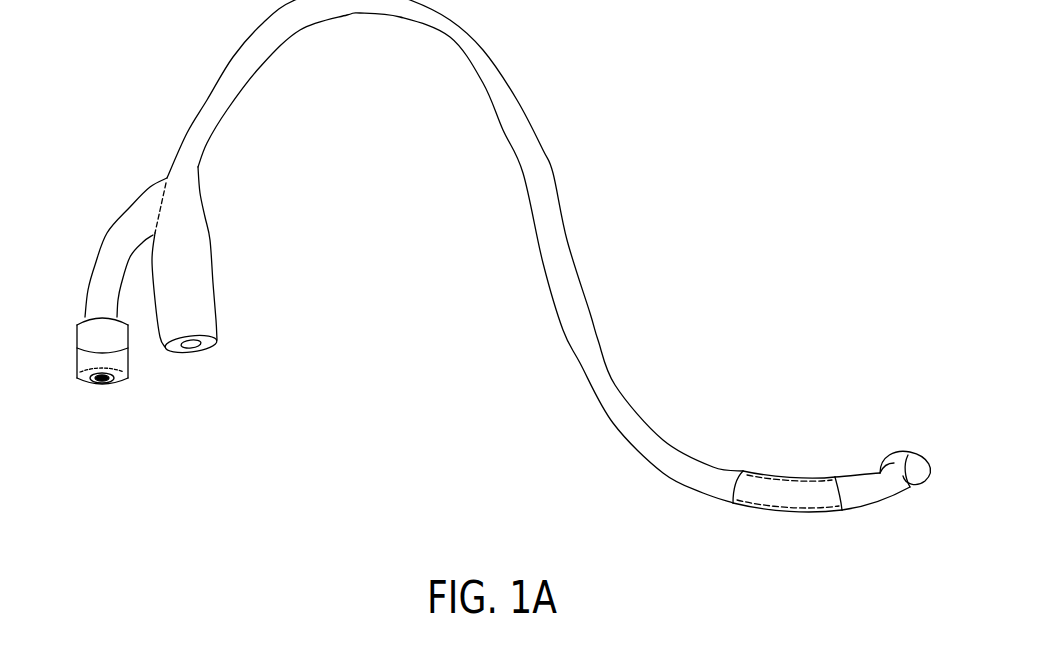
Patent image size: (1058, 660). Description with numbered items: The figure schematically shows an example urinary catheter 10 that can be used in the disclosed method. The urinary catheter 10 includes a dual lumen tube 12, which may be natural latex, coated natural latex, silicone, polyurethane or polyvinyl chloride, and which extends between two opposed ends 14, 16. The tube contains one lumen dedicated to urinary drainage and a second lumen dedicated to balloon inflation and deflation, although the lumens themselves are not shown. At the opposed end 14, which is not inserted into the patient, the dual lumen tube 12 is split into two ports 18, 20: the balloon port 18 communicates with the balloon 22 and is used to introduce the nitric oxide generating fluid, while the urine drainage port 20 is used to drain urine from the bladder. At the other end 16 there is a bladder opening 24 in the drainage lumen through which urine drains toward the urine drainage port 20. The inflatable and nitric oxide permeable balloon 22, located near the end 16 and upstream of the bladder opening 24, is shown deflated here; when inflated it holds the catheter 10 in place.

The urinary catheter 10 is at (790, 79).
The dual lumen tube 12 is at (552, 177).
The opposed end 14 is at (115, 145).
The opposed end 16 is at (912, 420).
The balloon port 18 is at (87, 358).
The urine drainage port 20 is at (187, 330).
The inflatable and nitric oxide permeable balloon 22 is at (803, 478).
The bladder opening 24 is at (910, 490).